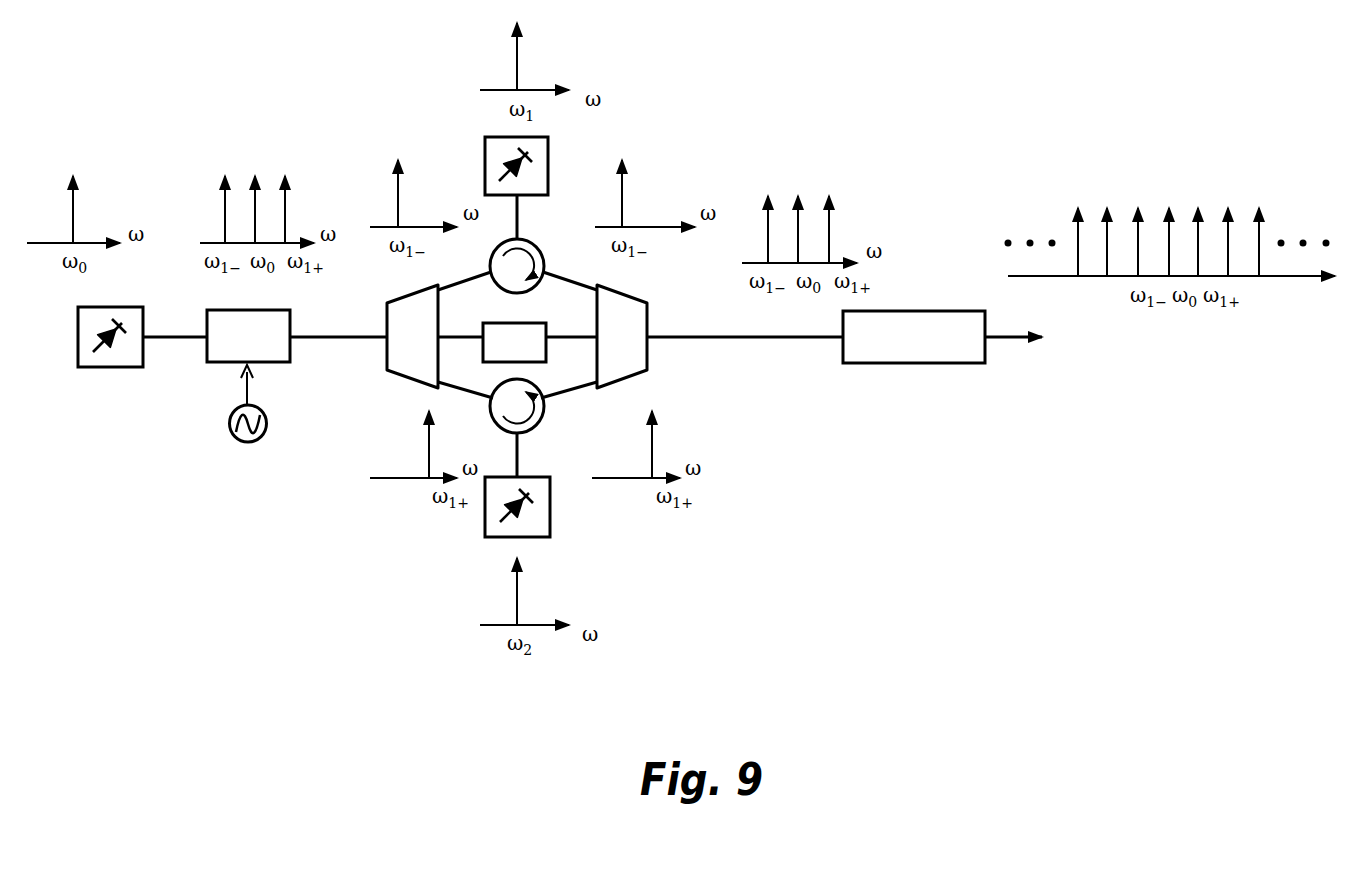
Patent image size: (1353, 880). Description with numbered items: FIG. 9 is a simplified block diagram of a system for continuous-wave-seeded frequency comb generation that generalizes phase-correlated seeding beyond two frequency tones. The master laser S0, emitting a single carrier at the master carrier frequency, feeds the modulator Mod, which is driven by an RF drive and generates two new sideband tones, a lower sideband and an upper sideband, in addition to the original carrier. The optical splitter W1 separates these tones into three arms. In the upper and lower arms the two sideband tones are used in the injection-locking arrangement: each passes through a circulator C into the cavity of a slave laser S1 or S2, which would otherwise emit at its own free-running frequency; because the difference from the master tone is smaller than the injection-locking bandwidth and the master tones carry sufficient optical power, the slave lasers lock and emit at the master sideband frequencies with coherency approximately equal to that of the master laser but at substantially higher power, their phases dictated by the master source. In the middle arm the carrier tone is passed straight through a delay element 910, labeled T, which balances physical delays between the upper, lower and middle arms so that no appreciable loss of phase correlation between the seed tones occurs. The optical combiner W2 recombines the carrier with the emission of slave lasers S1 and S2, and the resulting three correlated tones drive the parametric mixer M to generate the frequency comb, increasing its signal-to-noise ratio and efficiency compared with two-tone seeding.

The delay element 910 is at (507, 324).
The master laser S0 is at (90, 337).
The slave laser S1 is at (546, 166).
The slave laser S2 is at (546, 507).
The modulator Mod is at (248, 336).
The optical splitter W1 is at (414, 336).
The optical combiner W2 is at (623, 336).
The parametric mixer M is at (914, 337).
The circulator C is at (527, 336).